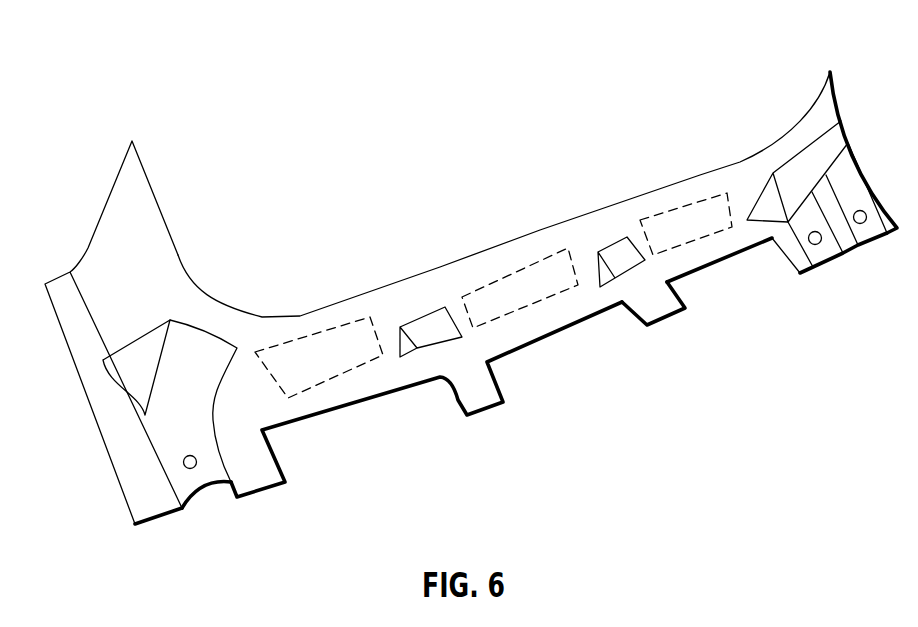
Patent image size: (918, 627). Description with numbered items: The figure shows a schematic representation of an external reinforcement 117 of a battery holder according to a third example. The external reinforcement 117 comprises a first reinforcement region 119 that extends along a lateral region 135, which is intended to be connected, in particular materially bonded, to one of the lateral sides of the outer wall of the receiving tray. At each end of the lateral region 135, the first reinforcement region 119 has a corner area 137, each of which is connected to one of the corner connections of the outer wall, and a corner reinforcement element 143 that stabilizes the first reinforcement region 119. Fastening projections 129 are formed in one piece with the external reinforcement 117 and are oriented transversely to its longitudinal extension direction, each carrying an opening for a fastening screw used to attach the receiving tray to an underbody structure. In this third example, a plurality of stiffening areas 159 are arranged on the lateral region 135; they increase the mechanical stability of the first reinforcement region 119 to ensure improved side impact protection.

The external reinforcement 117 is at (99, 72).
The first reinforcement region 119 is at (482, 261).
The lateral region 135 is at (540, 230).
The corner area 137 is at (177, 257).
The corner reinforcement element 143 is at (197, 358).
The fastening projection 129 is at (647, 312).
The stiffening area 159 is at (318, 342).